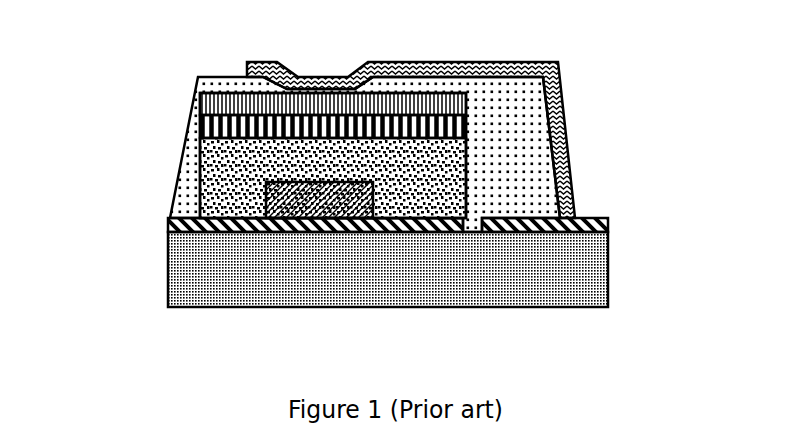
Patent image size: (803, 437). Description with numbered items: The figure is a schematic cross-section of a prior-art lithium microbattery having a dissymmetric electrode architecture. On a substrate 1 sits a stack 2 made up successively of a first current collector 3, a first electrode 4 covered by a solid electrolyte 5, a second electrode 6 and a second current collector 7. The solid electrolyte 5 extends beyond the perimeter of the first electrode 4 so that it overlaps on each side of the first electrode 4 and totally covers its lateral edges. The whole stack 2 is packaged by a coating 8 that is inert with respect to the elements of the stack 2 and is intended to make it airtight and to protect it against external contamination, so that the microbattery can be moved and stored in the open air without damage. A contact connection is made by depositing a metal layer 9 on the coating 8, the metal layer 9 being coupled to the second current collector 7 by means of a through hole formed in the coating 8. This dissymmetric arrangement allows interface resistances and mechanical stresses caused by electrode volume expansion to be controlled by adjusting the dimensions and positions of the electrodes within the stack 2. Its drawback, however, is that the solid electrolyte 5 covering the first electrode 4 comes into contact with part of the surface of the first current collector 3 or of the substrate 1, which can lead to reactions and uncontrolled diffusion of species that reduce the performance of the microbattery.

The substrate 1 is at (490, 300).
The stack 2 is at (77, 95).
The first current collector 3 is at (570, 220).
The first electrode 4 is at (265, 201).
The solid electrolyte 5 is at (213, 184).
The second electrode 6 is at (462, 122).
The second current collector 7 is at (215, 111).
The coating 8 is at (508, 95).
The metal layer 9 is at (473, 62).